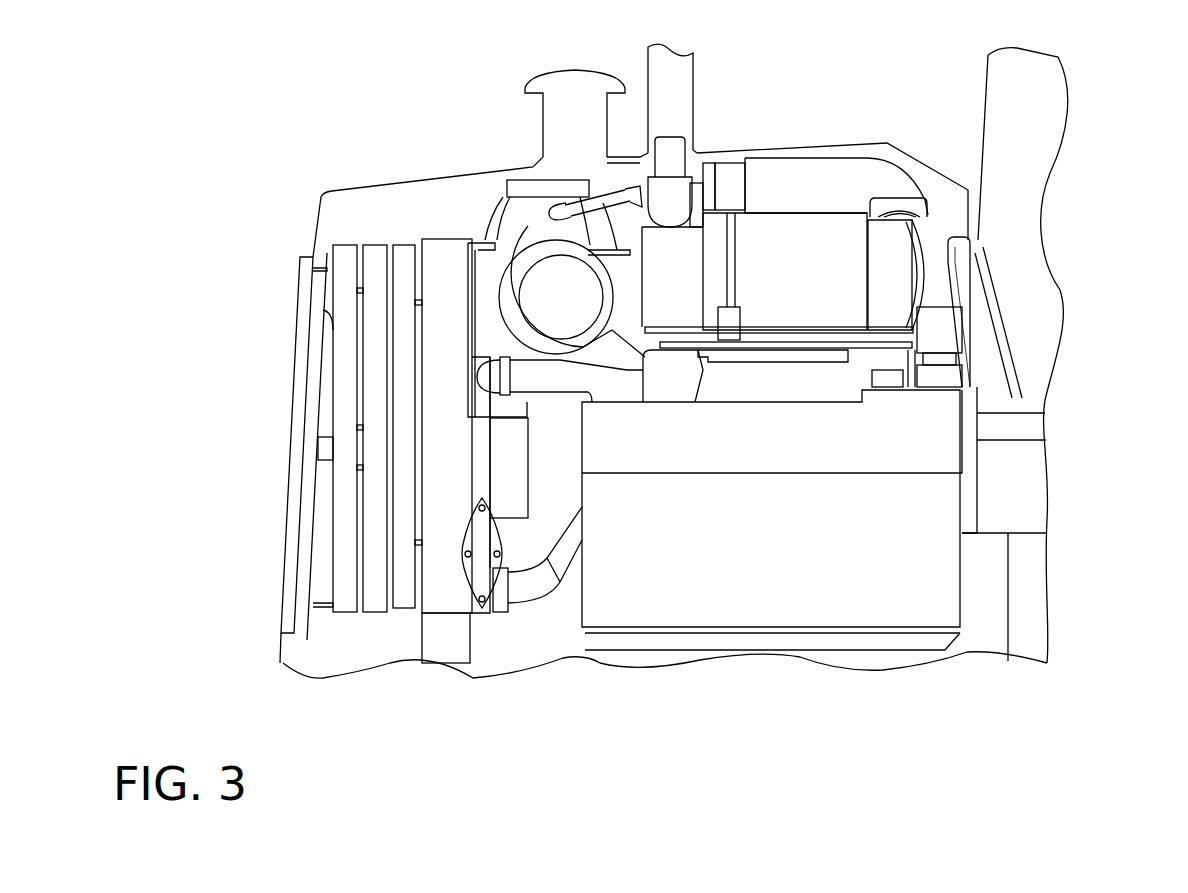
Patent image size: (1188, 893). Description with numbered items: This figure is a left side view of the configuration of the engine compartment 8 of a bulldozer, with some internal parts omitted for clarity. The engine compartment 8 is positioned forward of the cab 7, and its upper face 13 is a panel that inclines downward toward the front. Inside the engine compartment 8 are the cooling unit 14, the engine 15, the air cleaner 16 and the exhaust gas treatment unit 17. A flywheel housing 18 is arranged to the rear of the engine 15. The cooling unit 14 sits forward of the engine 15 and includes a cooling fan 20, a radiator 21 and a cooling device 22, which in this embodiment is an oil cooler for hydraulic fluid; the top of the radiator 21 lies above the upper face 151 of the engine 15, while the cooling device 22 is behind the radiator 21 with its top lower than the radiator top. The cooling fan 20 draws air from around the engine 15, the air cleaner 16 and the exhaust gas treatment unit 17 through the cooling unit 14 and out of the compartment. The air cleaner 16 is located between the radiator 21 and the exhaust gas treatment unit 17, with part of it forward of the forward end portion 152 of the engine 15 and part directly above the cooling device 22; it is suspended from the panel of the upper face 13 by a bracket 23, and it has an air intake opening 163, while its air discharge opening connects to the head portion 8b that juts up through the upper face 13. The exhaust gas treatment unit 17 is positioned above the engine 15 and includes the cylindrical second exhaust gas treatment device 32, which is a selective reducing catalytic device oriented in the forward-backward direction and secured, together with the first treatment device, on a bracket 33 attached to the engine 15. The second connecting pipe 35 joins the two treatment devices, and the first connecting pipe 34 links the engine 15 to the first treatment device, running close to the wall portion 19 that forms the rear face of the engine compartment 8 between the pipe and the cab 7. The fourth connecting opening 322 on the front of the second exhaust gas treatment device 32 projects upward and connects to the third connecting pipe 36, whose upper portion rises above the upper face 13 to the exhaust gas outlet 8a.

The cab 7 is at (1052, 110).
The engine compartment 8 is at (832, 120).
The exhaust gas outlet 8a is at (695, 85).
The head portion 8b is at (540, 122).
The upper face 13 is at (798, 142).
The cooling unit 14 is at (446, 231).
The engine 15 is at (793, 577).
The upper face of the engine 151 is at (760, 400).
The forward end portion of the engine 152 is at (582, 452).
The air cleaner 16 is at (550, 277).
The air intake opening 163 is at (571, 183).
The exhaust gas treatment unit 17 is at (855, 150).
The flywheel housing 18 is at (995, 585).
The wall portion 19 is at (982, 323).
The cooling fan 20 is at (327, 388).
The radiator 21 is at (437, 340).
The cooling device 22 is at (504, 462).
The bracket 23 is at (492, 245).
The second exhaust gas treatment device 32 is at (780, 220).
The fourth connecting opening 322 is at (700, 190).
The bracket 33 is at (890, 340).
The first connecting pipe 34 is at (953, 345).
The second connecting pipe 35 is at (893, 172).
The third connecting pipe 36 is at (670, 147).